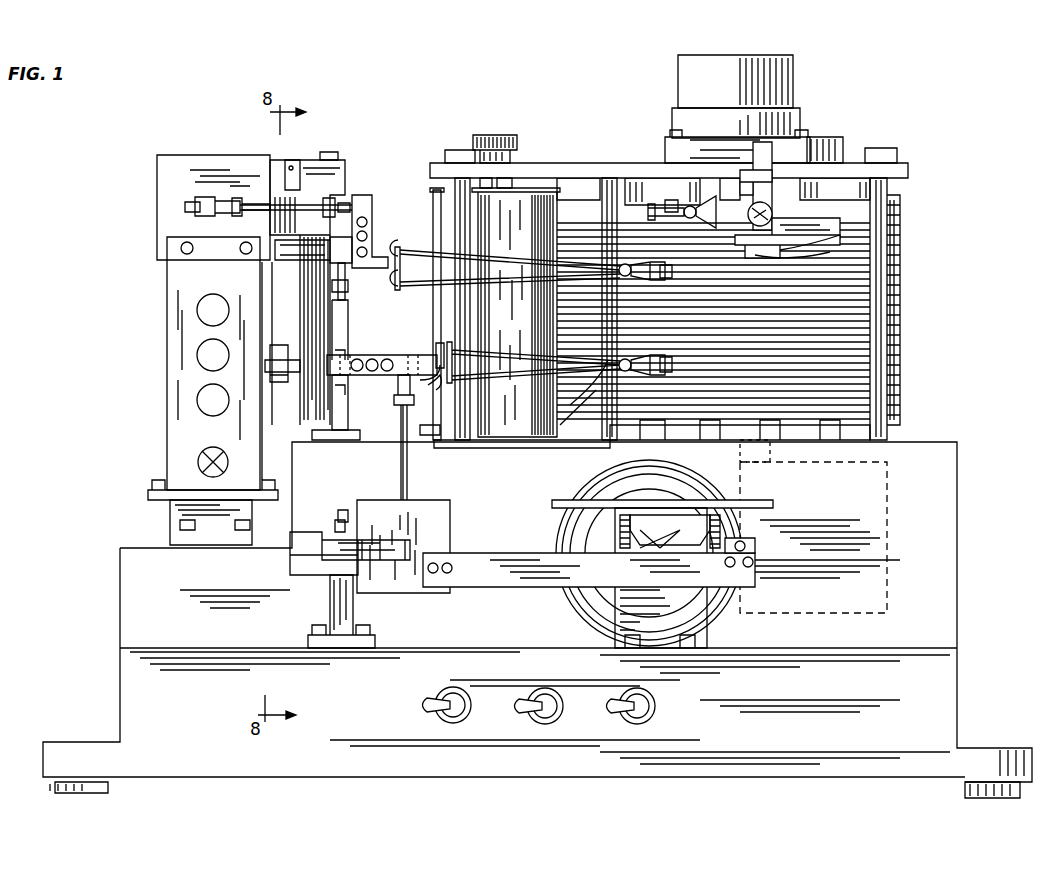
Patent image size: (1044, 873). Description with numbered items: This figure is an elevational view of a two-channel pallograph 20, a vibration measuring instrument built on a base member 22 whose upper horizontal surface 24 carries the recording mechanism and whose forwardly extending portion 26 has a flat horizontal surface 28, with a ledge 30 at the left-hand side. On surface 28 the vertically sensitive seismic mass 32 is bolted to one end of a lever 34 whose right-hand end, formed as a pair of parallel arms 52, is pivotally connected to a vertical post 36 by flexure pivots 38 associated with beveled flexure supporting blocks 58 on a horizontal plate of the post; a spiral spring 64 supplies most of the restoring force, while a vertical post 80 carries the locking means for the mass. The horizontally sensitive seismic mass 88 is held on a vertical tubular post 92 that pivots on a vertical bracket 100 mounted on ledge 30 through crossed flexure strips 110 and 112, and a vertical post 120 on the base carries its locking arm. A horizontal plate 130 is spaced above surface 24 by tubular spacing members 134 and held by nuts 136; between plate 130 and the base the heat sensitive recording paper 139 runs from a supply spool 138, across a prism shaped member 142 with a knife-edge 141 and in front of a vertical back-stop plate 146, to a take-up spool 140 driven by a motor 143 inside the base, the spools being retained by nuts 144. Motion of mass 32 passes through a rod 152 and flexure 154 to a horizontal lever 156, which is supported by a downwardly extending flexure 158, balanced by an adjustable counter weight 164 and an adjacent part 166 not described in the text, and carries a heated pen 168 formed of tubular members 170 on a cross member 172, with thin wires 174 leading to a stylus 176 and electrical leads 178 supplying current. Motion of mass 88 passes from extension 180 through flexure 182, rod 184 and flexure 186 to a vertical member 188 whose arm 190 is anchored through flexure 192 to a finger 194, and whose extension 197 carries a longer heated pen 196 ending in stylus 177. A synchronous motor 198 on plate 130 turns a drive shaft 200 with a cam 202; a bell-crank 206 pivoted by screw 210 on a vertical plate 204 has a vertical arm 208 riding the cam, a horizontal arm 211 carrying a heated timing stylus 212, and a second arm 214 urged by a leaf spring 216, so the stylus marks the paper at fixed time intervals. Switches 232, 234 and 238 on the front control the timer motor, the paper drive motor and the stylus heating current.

The pallograph 20 is at (103, 540).
The base member 22 is at (938, 490).
The upper horizontal surface 24 is at (912, 440).
The forwardly extending portion 26 is at (948, 680).
The upper flat horizontal surface 28 is at (885, 648).
The ledge 30 is at (145, 545).
The seismic mass 32 is at (380, 500).
The lever 34 is at (482, 560).
The vertical post 36 is at (692, 623).
The flexure pivots 38 is at (675, 541).
The arms 52 is at (748, 575).
The flexure supporting block 58 is at (665, 530).
The spiral spring 64 is at (590, 620).
The vertical post 80 is at (340, 622).
The second seismic mass 88 is at (168, 185).
The vertical tubular post 92 is at (165, 280).
The vertical bracket 100 is at (240, 517).
The spring-like strip of metal 110 is at (200, 455).
The second spring-like strip of metal 112 is at (203, 468).
The vertical post 120 is at (315, 300).
The horizontal plate 130 is at (565, 172).
The tubular spacing members 134 is at (882, 193).
The nuts 136 is at (897, 160).
The supply spool 138 is at (432, 188).
The heat sensitive recording paper 139 is at (575, 210).
The take-up spool 140 is at (890, 198).
The knife-edge 141 is at (650, 438).
The prism shaped member 142 is at (620, 205).
The motor 143 is at (887, 575).
The nut 144 is at (812, 178).
The vertical plate 146 is at (760, 435).
The rod member 152 is at (408, 460).
The second flexure member 154 is at (395, 385).
The horizontal lever 156 is at (377, 355).
The flexure member 158 is at (330, 388).
The counter weight 164 is at (278, 356).
The shaft 166 is at (298, 355).
The heated pen 168 is at (472, 336).
The tubular members 170 is at (490, 365).
The cross member 172 is at (424, 381).
The thin wire 174 is at (582, 312).
The stylus 176 is at (610, 395).
The stylus 177 is at (650, 268).
The electrical leads 178 is at (432, 345).
The forwardly extending member 180 is at (208, 200).
The flexure 182 is at (236, 200).
The rod member 184 is at (262, 205).
The flexure member 186 is at (340, 205).
The vertical member 188 is at (372, 227).
The arm 190 is at (330, 257).
The flexure member 192 is at (345, 280).
The forwardly extending finger 194 is at (348, 295).
The heated pen 196 is at (428, 258).
The extension 197 is at (385, 268).
The synchronous motor 198 is at (712, 75).
The drive shaft 200 is at (735, 158).
The cam member 202 is at (720, 162).
The vertical plate member 204 is at (772, 180).
The bell-crank 206 is at (820, 222).
The vertically extending arm 208 is at (765, 148).
The screw 210 is at (812, 202).
The horizontal arm 211 is at (699, 212).
The heated stylus member 212 is at (660, 205).
The second horizontally extending arm 214 is at (830, 228).
The leaf spring 216 is at (830, 248).
The switch 232 is at (458, 686).
The switch 234 is at (547, 697).
The switch 238 is at (640, 697).